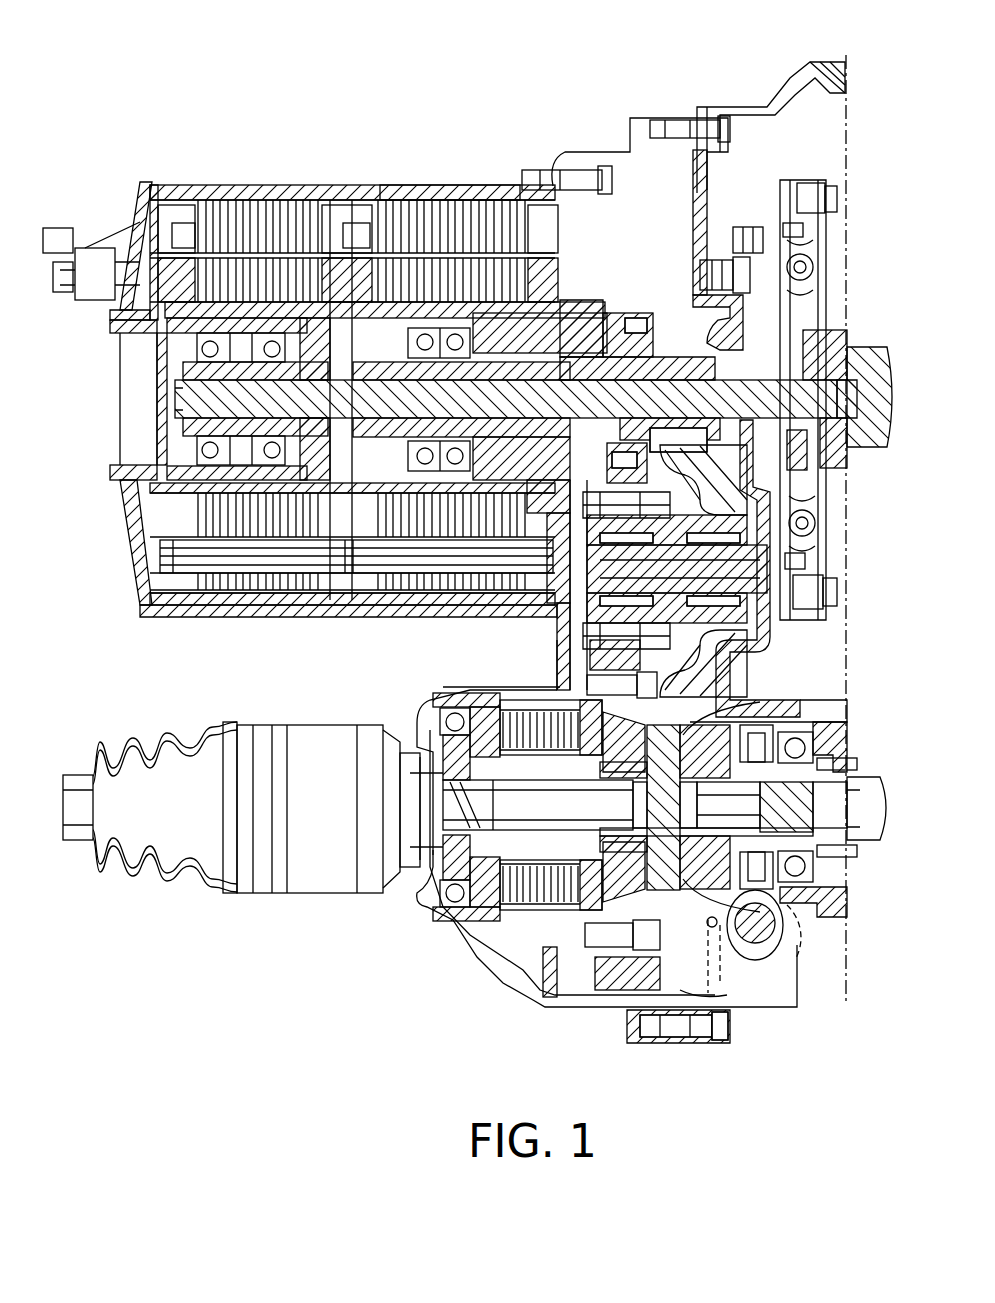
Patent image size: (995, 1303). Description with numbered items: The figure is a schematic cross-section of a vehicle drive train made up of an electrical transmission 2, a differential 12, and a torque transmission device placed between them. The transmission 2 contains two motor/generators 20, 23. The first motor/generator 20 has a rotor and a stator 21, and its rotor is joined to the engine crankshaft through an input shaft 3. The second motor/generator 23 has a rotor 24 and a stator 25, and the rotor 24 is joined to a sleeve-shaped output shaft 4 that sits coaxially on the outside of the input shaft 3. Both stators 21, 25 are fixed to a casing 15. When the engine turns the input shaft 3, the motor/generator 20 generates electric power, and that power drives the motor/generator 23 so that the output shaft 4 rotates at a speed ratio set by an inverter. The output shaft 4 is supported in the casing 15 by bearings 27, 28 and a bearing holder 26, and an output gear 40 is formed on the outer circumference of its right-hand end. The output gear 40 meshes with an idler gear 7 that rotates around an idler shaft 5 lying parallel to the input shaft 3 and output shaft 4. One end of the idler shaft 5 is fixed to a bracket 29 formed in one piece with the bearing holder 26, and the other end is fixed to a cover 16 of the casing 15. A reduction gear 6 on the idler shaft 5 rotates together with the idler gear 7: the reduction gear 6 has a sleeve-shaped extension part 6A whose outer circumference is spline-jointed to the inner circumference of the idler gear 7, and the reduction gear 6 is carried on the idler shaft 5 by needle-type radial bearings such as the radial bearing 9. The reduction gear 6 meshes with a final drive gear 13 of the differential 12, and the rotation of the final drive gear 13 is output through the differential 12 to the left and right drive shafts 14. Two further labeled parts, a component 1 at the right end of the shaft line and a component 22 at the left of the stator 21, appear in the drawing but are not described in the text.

The output shaft 1 is at (863, 343).
The electrical transmission 2 is at (118, 538).
The input shaft 3 is at (343, 397).
The output shaft 4 is at (557, 345).
The idler shaft 5 is at (740, 550).
The reduction gear 6 is at (560, 647).
The extension part 6A is at (722, 525).
The idler gear 7 is at (700, 686).
The radial bearing 9 is at (553, 603).
The differential 12 is at (790, 960).
The final drive gear 13 is at (593, 977).
The drive shaft 14 is at (870, 828).
The casing 15 is at (667, 120).
The cover 16 is at (707, 193).
The motor/generator 20 is at (243, 185).
The stator 21 is at (195, 238).
The terminal 22 is at (180, 300).
The motor/generator 23 is at (418, 190).
The rotor 24 is at (373, 265).
The stator 25 is at (447, 215).
The bearing holder 26 is at (510, 325).
The bearing 27 is at (433, 468).
The bearing 28 is at (623, 333).
The bracket 29 is at (587, 541).
The output gear 40 is at (685, 350).